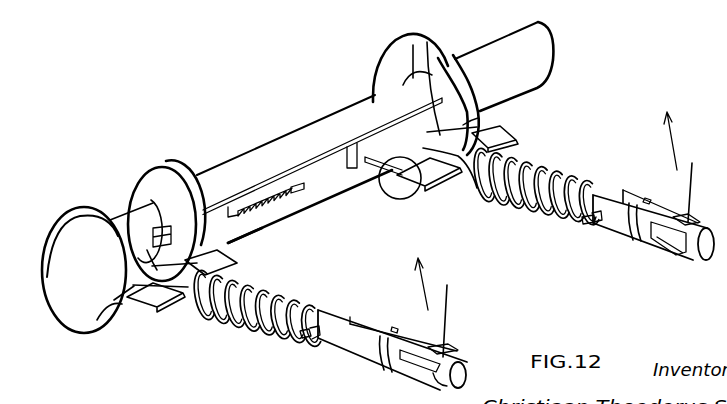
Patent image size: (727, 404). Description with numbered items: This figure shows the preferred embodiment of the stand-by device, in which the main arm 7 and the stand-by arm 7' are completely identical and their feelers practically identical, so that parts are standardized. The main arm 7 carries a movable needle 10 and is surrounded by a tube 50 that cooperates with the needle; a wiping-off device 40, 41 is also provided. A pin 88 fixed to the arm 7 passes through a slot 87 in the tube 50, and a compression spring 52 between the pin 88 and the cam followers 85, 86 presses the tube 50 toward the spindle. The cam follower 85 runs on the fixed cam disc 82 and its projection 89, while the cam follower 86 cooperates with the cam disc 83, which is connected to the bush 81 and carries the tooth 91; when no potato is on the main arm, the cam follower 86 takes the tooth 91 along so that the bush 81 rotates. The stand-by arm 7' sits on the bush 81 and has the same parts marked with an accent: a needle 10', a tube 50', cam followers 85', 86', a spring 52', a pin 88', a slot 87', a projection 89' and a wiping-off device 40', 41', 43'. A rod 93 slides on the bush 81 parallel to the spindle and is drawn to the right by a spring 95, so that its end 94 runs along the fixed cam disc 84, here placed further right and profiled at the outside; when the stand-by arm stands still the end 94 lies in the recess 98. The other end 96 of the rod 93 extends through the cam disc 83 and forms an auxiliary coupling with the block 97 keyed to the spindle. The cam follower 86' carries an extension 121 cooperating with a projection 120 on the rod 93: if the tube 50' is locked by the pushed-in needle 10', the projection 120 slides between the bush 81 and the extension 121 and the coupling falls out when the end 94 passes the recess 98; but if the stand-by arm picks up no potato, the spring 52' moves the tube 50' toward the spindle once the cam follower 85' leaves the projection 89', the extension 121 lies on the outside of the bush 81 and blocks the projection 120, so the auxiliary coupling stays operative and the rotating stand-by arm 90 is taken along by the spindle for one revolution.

The cam disc 82 is at (90, 208).
The block 97 is at (118, 222).
The end of rod 96 is at (151, 170).
The cam disc 83 is at (176, 165).
The bush 81 is at (359, 106).
The tooth 91 is at (229, 243).
The projection 120 is at (347, 145).
The rod 93 is at (238, 207).
The spring 95 is at (294, 184).
The extension 121 is at (388, 188).
The cam disc 84 is at (395, 56).
The recess 98 is at (420, 46).
The end of rod 94 is at (452, 64).
The projection 89' is at (501, 110).
The cam follower 85' is at (512, 136).
The cam follower 86' is at (429, 180).
The compression spring 52' is at (534, 187).
The pin 88' is at (571, 233).
The slot 87' is at (598, 234).
The tube 50' is at (650, 234).
The wiping-off device 43' is at (619, 203).
The wiping-off device 40' is at (660, 200).
The wiping-off device 41' is at (662, 197).
The needle 10' is at (696, 194).
The stand-by arm 7' is at (708, 253).
The stand-by arm 90 is at (672, 147).
The projection 89 is at (118, 323).
The cam follower 85 is at (156, 308).
The cam follower 86 is at (201, 268).
The compression spring 52 is at (256, 312).
The pin 88 is at (294, 350).
The slot 87 is at (322, 350).
The tube 50 is at (392, 357).
The wiping-off device 40 is at (403, 327).
The wiping-off device 41 is at (381, 313).
The needle 10 is at (451, 321).
The arm 7 is at (469, 378).